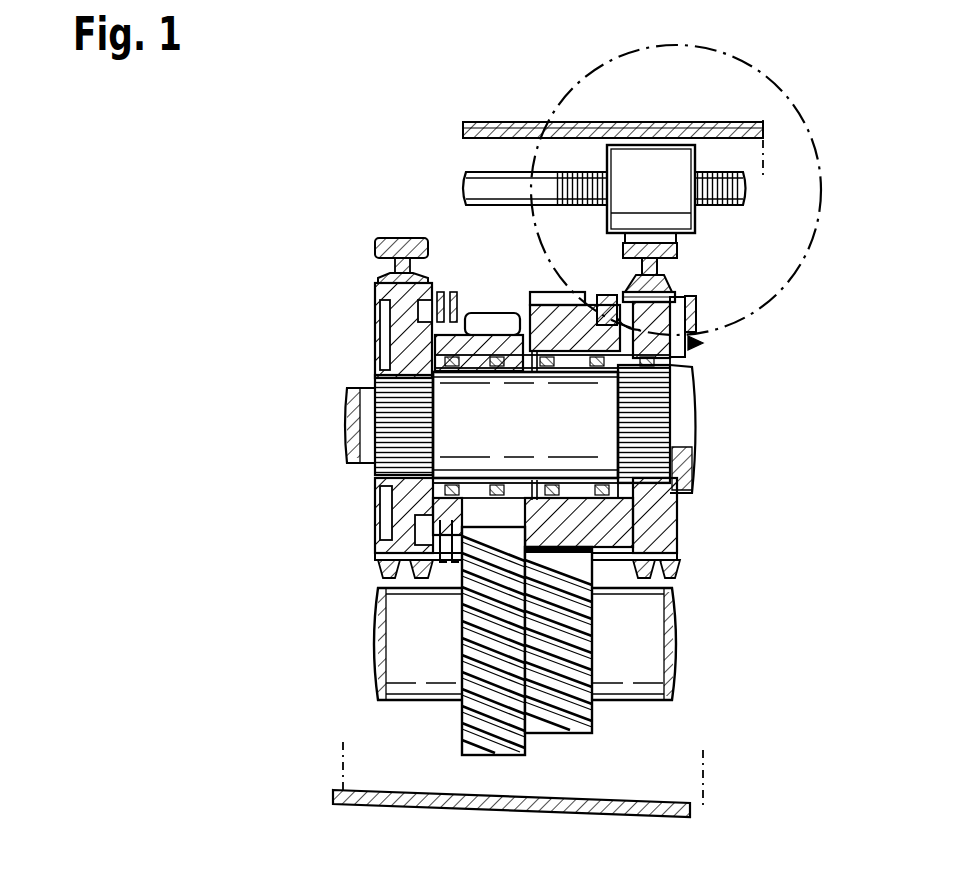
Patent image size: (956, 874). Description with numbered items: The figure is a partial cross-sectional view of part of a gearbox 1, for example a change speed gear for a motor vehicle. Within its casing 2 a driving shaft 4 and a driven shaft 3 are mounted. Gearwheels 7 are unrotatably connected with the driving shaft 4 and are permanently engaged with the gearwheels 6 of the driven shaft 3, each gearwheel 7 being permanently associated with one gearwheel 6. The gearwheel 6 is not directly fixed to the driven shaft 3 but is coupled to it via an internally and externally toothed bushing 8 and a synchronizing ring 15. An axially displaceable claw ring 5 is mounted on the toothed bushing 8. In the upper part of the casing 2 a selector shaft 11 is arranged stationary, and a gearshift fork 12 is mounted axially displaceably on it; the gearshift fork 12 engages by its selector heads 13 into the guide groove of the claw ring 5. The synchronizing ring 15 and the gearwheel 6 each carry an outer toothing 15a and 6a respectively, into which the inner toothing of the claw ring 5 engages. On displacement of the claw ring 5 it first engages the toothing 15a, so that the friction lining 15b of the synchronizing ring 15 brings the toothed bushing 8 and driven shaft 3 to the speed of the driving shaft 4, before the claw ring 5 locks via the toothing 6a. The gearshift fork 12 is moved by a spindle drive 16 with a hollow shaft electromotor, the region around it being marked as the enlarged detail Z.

The gearbox 1 is at (413, 162).
The detail Z is at (758, 70).
The casing 2 is at (535, 130).
The selector shaft 11 is at (722, 178).
The spindle drive 16 is at (651, 170).
The gearshift fork 12 is at (680, 243).
The selector heads 13 is at (661, 268).
The claw ring 5 is at (690, 291).
The outer toothing of synchronizing ring 15a is at (606, 292).
The synchronizing ring 15 is at (700, 318).
The friction lining 15b is at (700, 336).
The gearwheel of driven shaft 6 is at (500, 312).
The outer toothing of gearwheel 6a is at (590, 300).
The driven shaft 3 is at (685, 400).
The toothed bushing 8 is at (655, 524).
The gearwheel of driving shaft 7 is at (550, 724).
The driving shaft 4 is at (655, 617).